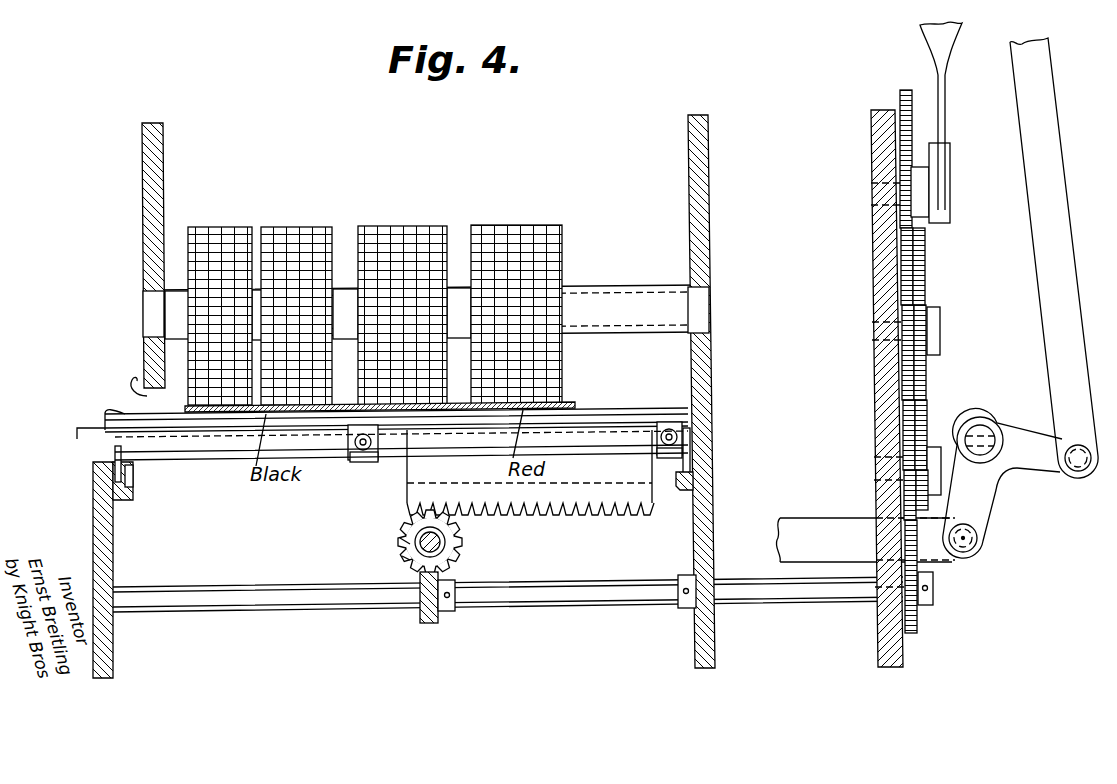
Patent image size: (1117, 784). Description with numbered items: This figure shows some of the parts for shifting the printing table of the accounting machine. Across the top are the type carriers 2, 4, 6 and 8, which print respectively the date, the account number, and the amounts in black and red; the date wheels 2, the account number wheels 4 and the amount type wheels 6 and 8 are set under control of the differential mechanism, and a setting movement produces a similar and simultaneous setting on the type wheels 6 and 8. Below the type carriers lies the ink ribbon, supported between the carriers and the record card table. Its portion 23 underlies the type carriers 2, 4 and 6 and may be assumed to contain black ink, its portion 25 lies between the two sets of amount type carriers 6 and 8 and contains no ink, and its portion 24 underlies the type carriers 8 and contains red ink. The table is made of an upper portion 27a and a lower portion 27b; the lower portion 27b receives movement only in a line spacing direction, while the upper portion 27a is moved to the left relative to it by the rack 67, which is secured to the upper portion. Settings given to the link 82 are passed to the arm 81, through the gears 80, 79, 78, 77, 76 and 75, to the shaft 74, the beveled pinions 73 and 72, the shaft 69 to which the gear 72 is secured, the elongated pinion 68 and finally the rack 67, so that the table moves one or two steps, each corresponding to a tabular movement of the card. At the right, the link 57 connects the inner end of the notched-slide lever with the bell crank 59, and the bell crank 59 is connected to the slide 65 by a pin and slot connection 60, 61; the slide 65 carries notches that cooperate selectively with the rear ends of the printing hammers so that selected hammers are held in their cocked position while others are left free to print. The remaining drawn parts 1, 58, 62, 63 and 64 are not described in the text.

The shaft 1 is at (150, 312).
The date wheels 2 is at (219, 242).
The account number wheels 4 is at (291, 242).
The type wheels 6 is at (404, 242).
The type wheels 8 is at (518, 242).
The ribbon portion 23 is at (187, 406).
The ribbon portion 24 is at (576, 404).
The ribbon portion 25 is at (460, 402).
The upper portion of the table 27a is at (105, 428).
The lower portion of the table 27b is at (115, 448).
The link 57 is at (1058, 160).
The pivot pin 58 is at (985, 428).
The bell crank 59 is at (988, 490).
The pin and slot connection 60 is at (968, 553).
The pin and slot connection 61 is at (962, 550).
The frame plate 62 is at (880, 358).
The frame wall 63 is at (712, 480).
The frame wall 64 is at (98, 541).
The slide 65 is at (806, 528).
The rack 67 is at (560, 510).
The elongated pinion 68 is at (460, 528).
The shaft 69 is at (404, 546).
The beveled pinion 72 is at (404, 560).
The beveled pinion 73 is at (420, 622).
The shaft 74 is at (577, 598).
The gear 75 is at (918, 626).
The gear 76 is at (906, 425).
The gear 77 is at (923, 443).
The gear 78 is at (918, 382).
The gear 79 is at (912, 308).
The gear 80 is at (900, 96).
The arm 81 is at (937, 216).
The link 82 is at (950, 42).